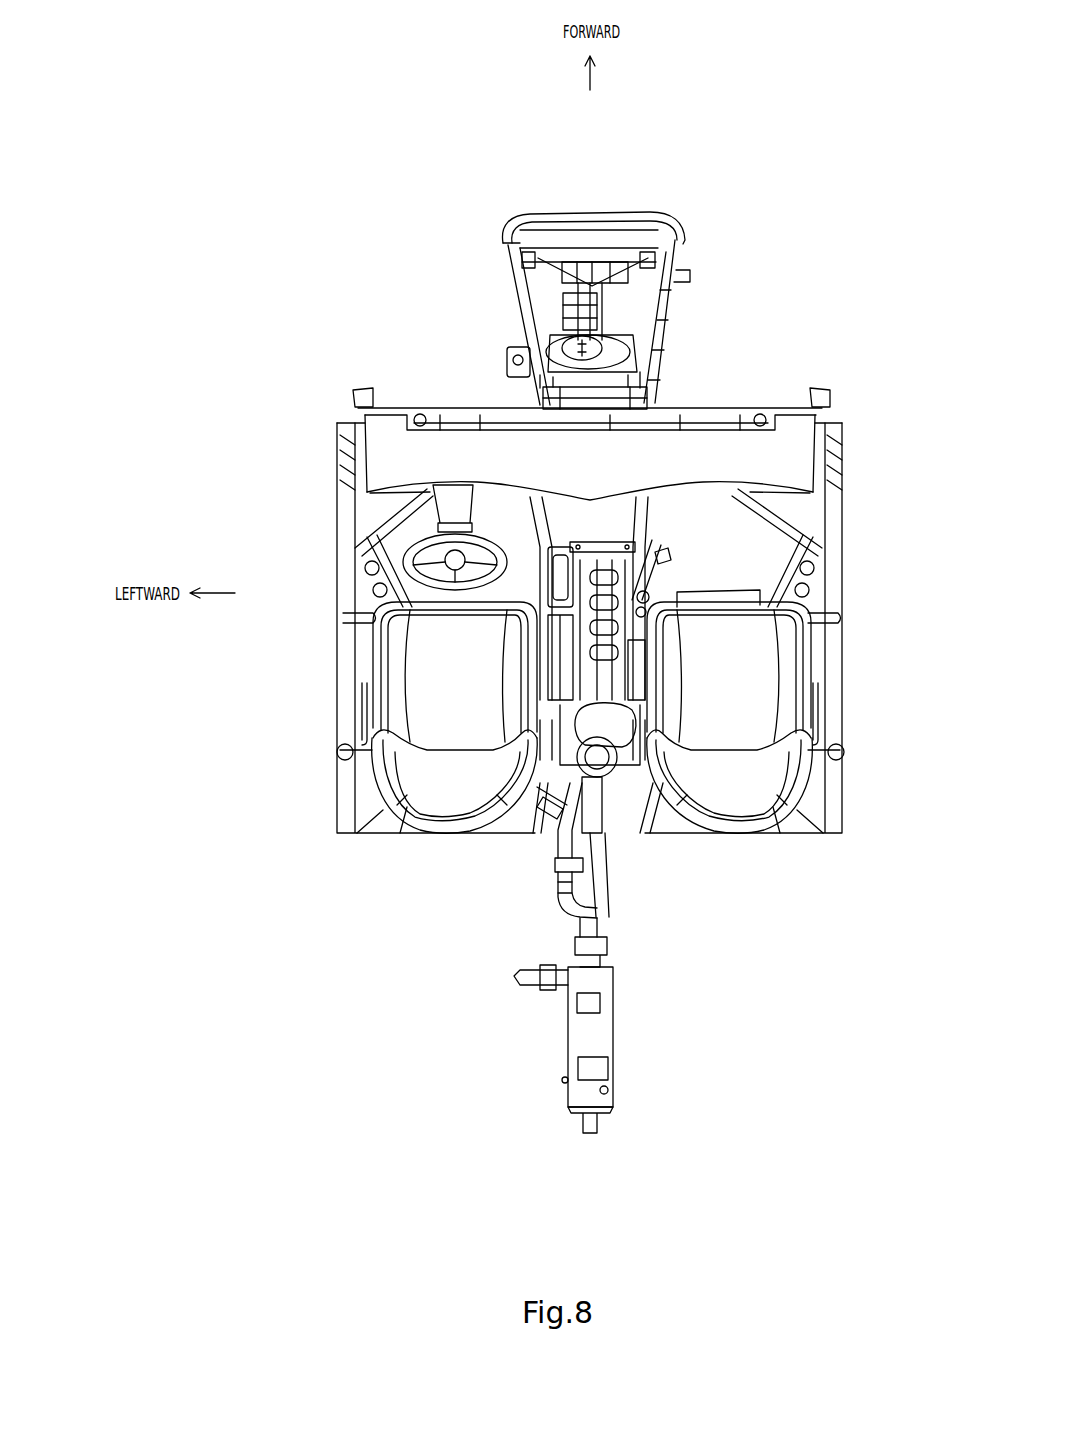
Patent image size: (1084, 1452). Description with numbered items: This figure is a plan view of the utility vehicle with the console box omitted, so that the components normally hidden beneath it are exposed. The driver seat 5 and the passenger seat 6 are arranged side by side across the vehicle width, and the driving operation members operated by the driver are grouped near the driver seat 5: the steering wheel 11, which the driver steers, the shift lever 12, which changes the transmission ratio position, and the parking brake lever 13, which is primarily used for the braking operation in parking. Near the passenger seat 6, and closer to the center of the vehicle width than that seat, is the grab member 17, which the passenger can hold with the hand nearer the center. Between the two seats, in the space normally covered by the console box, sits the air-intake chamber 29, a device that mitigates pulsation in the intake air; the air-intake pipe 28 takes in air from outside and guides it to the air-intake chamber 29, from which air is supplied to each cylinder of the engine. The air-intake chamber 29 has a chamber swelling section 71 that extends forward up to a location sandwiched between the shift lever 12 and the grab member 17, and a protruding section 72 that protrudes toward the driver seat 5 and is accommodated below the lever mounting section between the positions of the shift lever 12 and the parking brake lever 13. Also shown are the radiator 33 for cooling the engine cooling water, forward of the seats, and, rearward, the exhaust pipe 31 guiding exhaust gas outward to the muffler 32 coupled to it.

The driver seat 5 is at (452, 810).
The passenger seat 6 is at (738, 810).
The steering wheel 11 is at (413, 530).
The shift lever 12 is at (517, 613).
The parking brake lever 13 is at (527, 690).
The grab member 17 is at (665, 580).
The air-intake pipe 28 is at (545, 520).
The air-intake chamber 29 is at (632, 658).
The exhaust pipe 31 is at (560, 892).
The muffler 32 is at (597, 1040).
The radiator 33 is at (635, 212).
The chamber swelling section 71 is at (650, 575).
The protruding section 72 is at (552, 648).